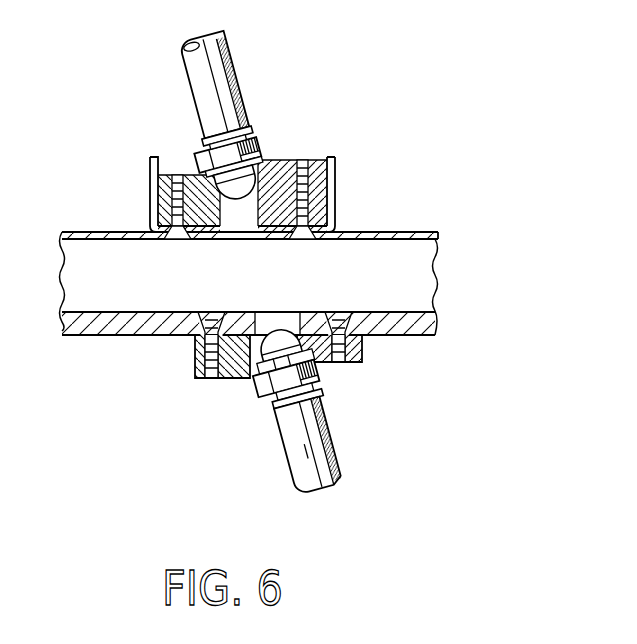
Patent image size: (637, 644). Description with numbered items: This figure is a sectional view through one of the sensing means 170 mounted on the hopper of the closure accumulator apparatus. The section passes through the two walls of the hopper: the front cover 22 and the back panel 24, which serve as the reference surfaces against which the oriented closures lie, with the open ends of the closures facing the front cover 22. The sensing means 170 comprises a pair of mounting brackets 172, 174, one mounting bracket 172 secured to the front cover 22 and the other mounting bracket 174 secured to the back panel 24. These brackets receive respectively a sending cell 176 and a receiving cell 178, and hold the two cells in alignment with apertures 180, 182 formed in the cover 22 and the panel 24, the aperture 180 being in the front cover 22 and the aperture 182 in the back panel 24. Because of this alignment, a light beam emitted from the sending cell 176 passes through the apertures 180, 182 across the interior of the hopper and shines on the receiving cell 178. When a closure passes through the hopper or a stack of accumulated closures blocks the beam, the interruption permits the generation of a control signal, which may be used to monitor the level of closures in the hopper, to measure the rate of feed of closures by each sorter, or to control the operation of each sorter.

The front cover 22 is at (427, 325).
The back panel 24 is at (410, 232).
The sensing means 170 is at (152, 367).
The mounting bracket 172 is at (250, 380).
The mounting bracket 174 is at (292, 157).
The sending cell 176 is at (320, 390).
The receiving cell 178 is at (197, 153).
The aperture 180 is at (294, 324).
The aperture 182 is at (235, 240).